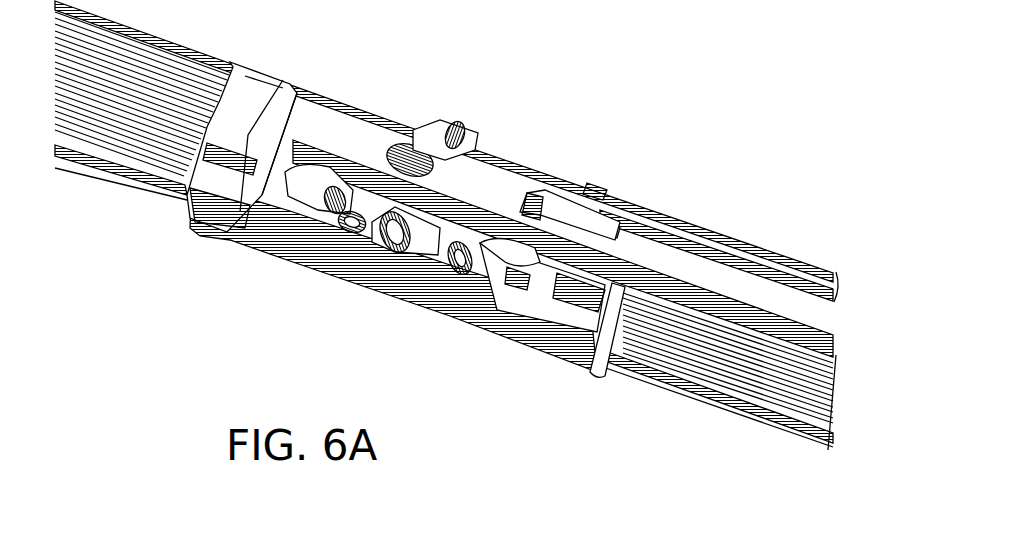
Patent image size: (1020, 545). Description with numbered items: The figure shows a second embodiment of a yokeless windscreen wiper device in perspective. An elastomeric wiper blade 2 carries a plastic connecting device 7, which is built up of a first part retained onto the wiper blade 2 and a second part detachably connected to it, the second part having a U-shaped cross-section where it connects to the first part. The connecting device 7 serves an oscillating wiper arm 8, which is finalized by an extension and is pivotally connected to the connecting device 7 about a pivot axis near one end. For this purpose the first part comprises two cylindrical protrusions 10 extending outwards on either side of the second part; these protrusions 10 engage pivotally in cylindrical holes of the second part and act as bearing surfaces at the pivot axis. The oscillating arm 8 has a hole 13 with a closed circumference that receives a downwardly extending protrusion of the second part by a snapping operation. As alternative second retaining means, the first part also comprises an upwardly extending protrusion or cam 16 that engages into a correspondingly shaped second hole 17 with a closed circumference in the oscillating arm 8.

The wiper blade 2 is at (732, 367).
The connecting device 7 is at (460, 320).
The oscillating wiper arm 8 is at (722, 280).
The cylindrical protrusions 10 is at (470, 130).
The hole 13 is at (425, 140).
The upwardly extending protrusion or cam 16 is at (240, 202).
The second hole 17 is at (557, 187).